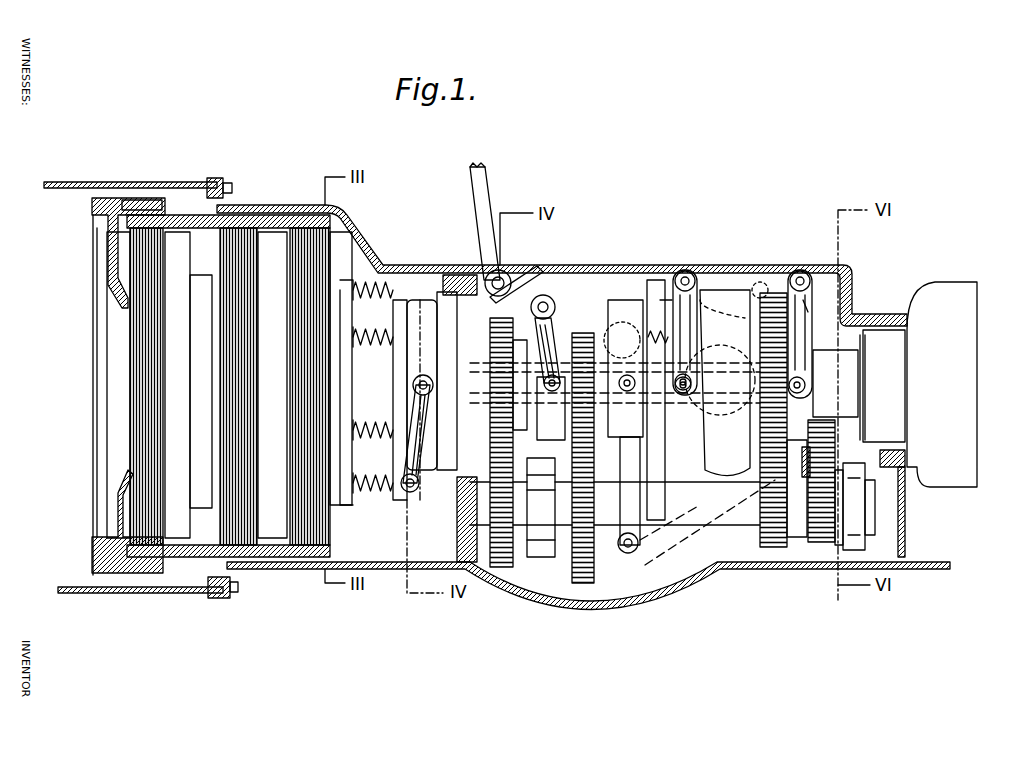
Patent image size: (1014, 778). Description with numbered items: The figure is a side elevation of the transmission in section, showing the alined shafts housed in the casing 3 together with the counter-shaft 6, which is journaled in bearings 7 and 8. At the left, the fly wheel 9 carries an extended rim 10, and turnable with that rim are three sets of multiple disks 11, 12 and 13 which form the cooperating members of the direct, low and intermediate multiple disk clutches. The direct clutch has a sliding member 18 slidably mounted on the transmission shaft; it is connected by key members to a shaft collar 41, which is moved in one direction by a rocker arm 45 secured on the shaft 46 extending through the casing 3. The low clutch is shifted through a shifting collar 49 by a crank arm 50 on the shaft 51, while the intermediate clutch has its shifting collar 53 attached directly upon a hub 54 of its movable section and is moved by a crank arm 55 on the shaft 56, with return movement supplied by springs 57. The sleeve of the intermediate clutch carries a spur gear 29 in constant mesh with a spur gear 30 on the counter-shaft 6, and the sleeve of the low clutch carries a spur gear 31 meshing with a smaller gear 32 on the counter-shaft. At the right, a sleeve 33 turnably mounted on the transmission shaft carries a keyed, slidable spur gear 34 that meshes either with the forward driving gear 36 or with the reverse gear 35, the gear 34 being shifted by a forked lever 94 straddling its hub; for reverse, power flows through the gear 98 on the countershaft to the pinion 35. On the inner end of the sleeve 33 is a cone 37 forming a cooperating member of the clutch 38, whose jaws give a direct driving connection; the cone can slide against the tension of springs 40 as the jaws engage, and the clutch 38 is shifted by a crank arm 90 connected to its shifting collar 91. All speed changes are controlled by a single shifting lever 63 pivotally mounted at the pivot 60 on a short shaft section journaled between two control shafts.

The casing 3 is at (722, 270).
The counter-shaft 6 is at (615, 503).
The bearing 7 is at (870, 523).
The bearing 8 is at (541, 557).
The fly wheel 9 is at (92, 212).
The extended rim 10 is at (268, 215).
The set of multiple disks 11 is at (130, 265).
The set of multiple disks 12 is at (222, 245).
The set of multiple disks 13 is at (300, 228).
The sliding member 18 is at (170, 280).
The spur gear 29 is at (535, 370).
The spur gear 30 is at (490, 552).
The spur gear 31 is at (612, 335).
The gear 32 is at (594, 568).
The sleeve 33 is at (823, 352).
The spur gear 34 is at (797, 300).
The reverse gear 35 is at (871, 494).
The forward driving gear 36 is at (775, 550).
The cone 37 is at (758, 290).
The clutch 38 is at (708, 300).
The springs 40 is at (765, 455).
The shaft collar 41 is at (648, 300).
The rocker arm 45 is at (638, 536).
The shaft 46 is at (634, 552).
The shifting collar 49 is at (560, 320).
The crank arm 50 is at (555, 300).
The shaft 51 is at (543, 295).
The shifting collar 53 is at (420, 300).
The hub 54 is at (393, 300).
The crank arm 55 is at (432, 455).
The shaft 56 is at (405, 490).
The springs 57 is at (375, 412).
The pivot 60 is at (488, 282).
The shifting lever 63 is at (486, 186).
The crank arm 90 is at (690, 300).
The shifting collar 91 is at (660, 300).
The forked lever 94 is at (805, 305).
The gear 98 is at (822, 545).